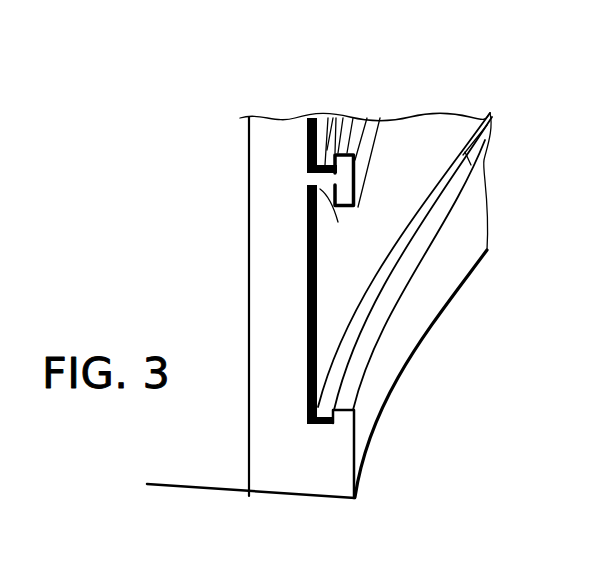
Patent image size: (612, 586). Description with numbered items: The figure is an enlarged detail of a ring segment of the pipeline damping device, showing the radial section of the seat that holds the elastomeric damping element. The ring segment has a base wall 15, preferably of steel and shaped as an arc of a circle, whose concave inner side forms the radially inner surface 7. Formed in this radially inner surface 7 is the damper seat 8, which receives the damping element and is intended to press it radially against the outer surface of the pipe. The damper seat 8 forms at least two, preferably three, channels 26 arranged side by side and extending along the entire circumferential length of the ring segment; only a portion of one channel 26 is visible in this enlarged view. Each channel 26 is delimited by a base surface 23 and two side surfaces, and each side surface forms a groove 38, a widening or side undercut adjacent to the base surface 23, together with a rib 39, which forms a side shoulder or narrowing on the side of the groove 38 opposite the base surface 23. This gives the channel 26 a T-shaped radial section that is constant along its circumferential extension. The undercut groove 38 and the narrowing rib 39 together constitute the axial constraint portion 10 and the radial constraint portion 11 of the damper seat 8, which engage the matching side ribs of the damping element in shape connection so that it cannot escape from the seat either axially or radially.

The radially inner surface 7 is at (395, 205).
The damper seat 8 is at (410, 182).
The axial constraint portion 10 is at (280, 238).
The radial constraint portion 11 is at (306, 198).
The base wall 15 is at (288, 165).
The base surface 23 is at (375, 303).
The channel 26 is at (357, 237).
The groove 38 is at (337, 120).
The rib 39 is at (363, 120).